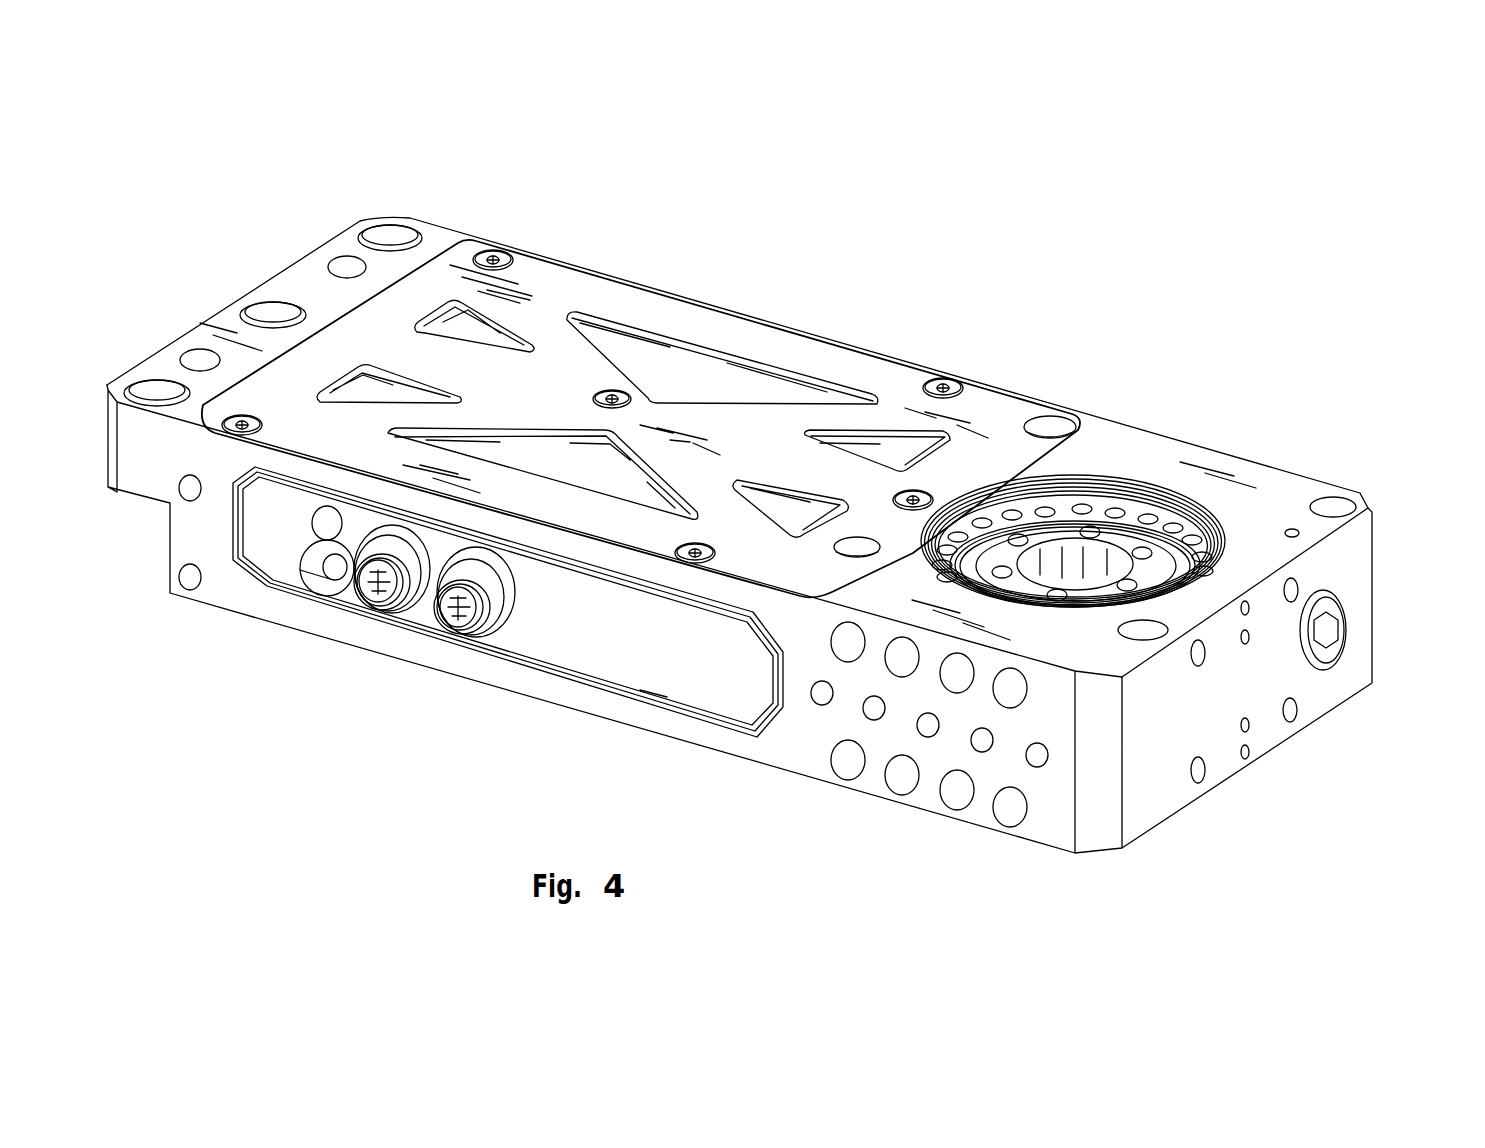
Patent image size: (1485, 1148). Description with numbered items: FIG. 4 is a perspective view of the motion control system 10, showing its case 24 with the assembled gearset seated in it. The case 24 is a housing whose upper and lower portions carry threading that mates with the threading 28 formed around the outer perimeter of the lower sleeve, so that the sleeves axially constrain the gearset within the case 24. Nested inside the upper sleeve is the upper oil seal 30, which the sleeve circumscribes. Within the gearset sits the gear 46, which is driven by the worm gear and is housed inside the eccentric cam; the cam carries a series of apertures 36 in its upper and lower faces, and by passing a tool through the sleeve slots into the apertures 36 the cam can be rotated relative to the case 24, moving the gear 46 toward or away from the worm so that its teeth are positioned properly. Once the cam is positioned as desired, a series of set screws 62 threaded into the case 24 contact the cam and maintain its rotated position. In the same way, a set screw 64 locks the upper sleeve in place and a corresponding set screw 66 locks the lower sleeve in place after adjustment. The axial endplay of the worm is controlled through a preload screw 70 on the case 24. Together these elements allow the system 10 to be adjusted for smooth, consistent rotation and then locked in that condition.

The motion control system 10 is at (930, 218).
The case 24 is at (1294, 487).
The threading 28 is at (1145, 497).
The upper oil seal 30 is at (1180, 563).
The apertures 36 is at (1012, 510).
The gear 46 is at (1067, 530).
The set screws 62 is at (1249, 637).
The set screw 64 is at (1249, 606).
The set screw 66 is at (1249, 753).
The preload screw 70 is at (1340, 637).